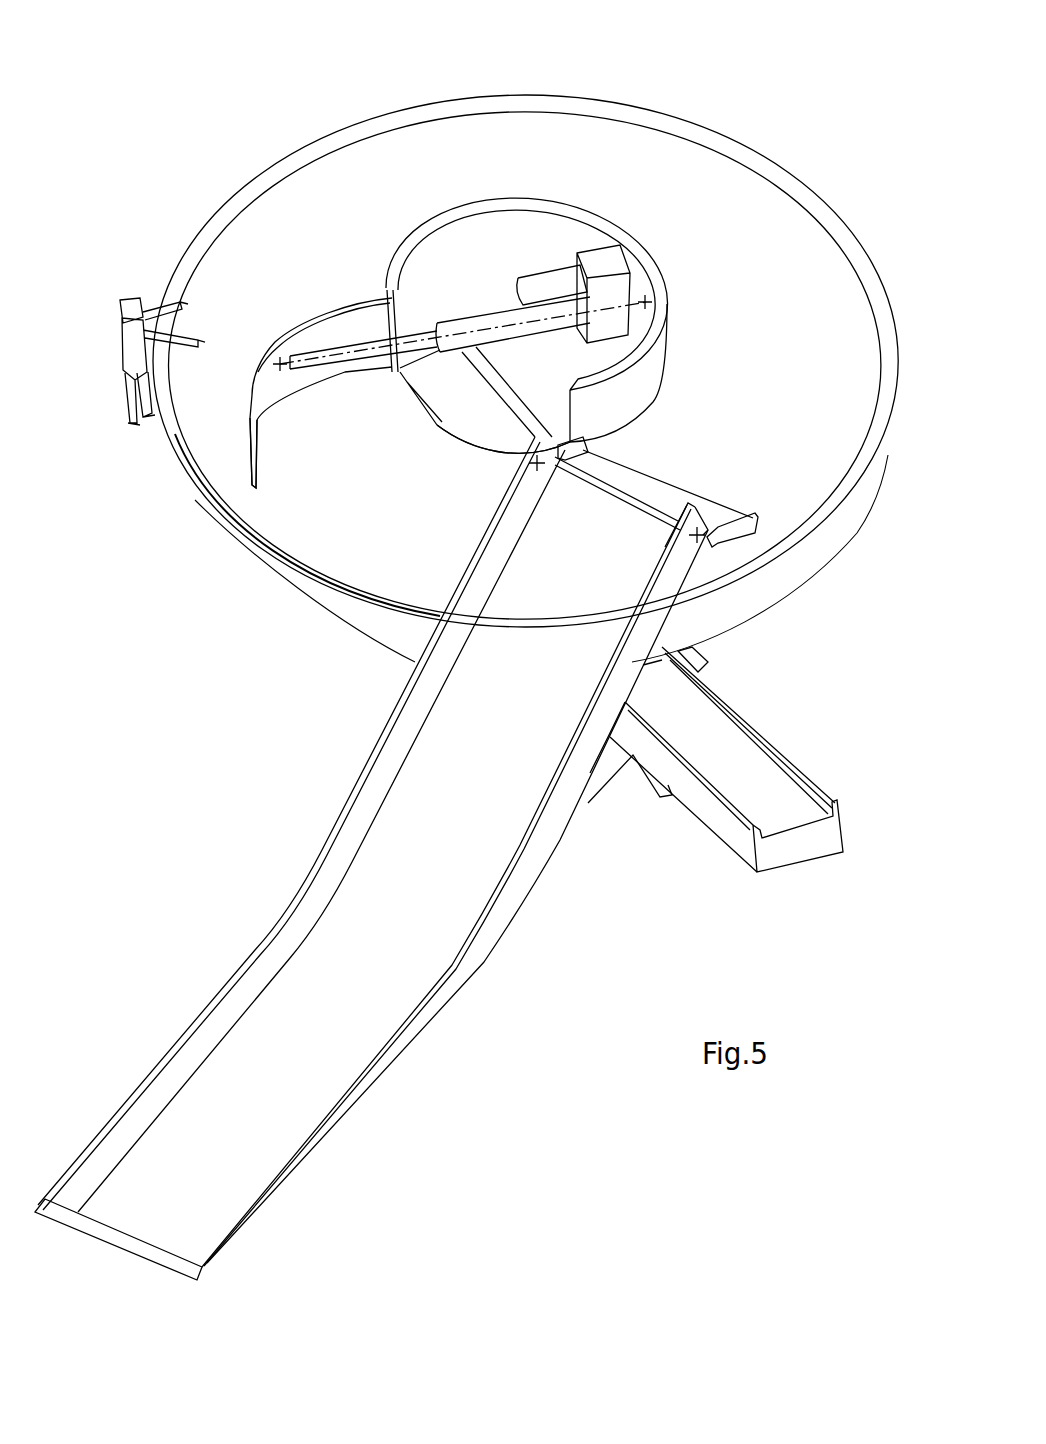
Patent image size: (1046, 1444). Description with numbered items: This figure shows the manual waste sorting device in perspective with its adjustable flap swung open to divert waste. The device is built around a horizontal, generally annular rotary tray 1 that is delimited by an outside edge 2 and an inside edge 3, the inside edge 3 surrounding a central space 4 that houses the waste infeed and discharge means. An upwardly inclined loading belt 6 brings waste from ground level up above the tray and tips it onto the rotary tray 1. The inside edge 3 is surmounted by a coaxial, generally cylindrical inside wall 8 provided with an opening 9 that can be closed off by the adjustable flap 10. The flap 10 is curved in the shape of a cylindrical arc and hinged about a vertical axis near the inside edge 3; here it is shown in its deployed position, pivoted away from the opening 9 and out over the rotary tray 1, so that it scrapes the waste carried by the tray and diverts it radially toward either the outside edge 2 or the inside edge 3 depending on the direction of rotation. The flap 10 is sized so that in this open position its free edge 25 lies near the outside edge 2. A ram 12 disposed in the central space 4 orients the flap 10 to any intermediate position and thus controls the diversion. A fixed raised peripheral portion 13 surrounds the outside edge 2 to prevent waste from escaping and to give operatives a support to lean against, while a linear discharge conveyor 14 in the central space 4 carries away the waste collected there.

The rotary tray 1 is at (688, 177).
The outside edge 2 is at (742, 166).
The inside edge 3 is at (672, 395).
The central space 4 is at (527, 240).
The loading belt 6 is at (359, 918).
The inside wall 8 is at (543, 213).
The opening 9 is at (463, 425).
The adjustable flap 10 is at (328, 325).
The ram 12 is at (500, 315).
The peripheral portion 13 is at (883, 440).
The discharge conveyor 14 is at (766, 778).
The free edge 25 is at (253, 463).